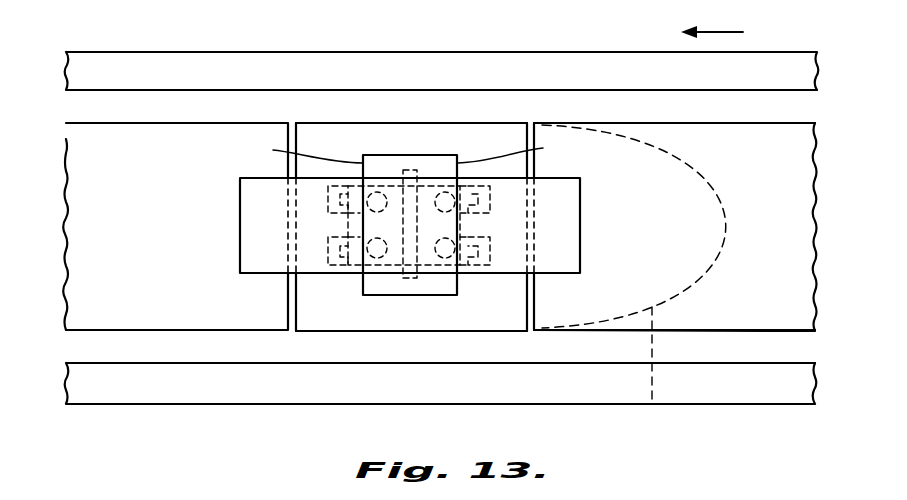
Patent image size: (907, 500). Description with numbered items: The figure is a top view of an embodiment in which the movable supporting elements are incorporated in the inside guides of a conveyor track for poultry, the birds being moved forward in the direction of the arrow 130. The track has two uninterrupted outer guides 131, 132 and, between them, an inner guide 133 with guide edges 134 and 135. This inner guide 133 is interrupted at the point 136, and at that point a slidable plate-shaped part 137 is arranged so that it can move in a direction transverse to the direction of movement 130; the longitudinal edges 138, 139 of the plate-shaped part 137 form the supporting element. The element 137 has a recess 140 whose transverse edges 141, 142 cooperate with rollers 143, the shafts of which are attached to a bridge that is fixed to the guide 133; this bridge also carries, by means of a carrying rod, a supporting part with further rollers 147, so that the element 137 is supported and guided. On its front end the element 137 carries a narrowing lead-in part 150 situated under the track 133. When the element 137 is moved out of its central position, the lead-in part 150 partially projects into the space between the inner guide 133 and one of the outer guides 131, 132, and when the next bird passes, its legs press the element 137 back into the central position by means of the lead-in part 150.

The direction of movement 130 is at (743, 32).
The outer guide 131 is at (617, 63).
The outer guide 132 is at (727, 391).
The inner guide 133 is at (808, 214).
The guide edge 134 is at (797, 122).
The guide edge 135 is at (790, 331).
The interruption point 136 is at (574, 352).
The plate-shaped part 137 is at (503, 130).
The longitudinal edge 138 is at (315, 108).
The longitudinal edge 139 is at (333, 338).
The recess 140 is at (421, 160).
The transverse edge 141 is at (518, 150).
The transverse edge 142 is at (299, 148).
The rollers 143 is at (377, 190).
The rollers 147 is at (327, 196).
The lead-in part 150 is at (654, 408).